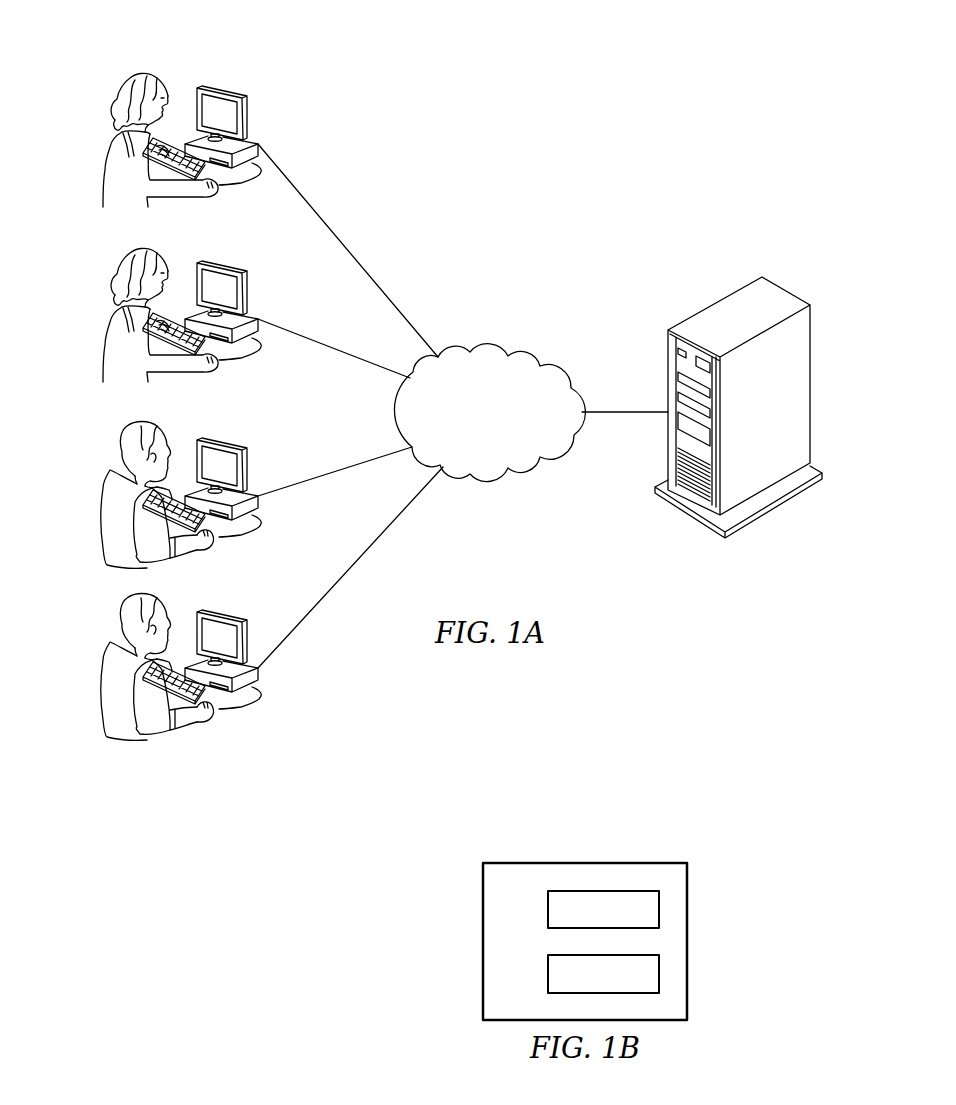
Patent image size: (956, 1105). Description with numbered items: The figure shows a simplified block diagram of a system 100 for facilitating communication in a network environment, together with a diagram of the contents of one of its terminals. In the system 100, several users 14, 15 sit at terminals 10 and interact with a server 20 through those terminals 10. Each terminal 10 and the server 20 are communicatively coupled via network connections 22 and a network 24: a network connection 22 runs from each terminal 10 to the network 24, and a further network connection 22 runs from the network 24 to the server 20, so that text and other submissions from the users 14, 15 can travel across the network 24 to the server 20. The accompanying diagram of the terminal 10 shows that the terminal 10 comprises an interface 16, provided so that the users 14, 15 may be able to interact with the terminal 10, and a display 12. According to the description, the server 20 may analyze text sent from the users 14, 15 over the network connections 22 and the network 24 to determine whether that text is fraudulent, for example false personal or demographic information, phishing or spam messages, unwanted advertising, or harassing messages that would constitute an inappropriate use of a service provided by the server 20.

In FIG. 1A, the terminal 10 is at (252, 635).
In FIG. 1B, the terminal 10 is at (615, 856).
In FIG. 1B, the display 12 is at (547, 903).
In FIG. 1A, the user 14 is at (115, 146).
In FIG. 1A, the user 15 is at (122, 548).
In FIG. 1B, the interface 16 is at (547, 981).
In FIG. 1A, the server 20 is at (718, 303).
In FIG. 1A, the network connection 22 is at (352, 250).
In FIG. 1A, the network 24 is at (488, 342).
In FIG. 1A, the system 100 is at (566, 226).